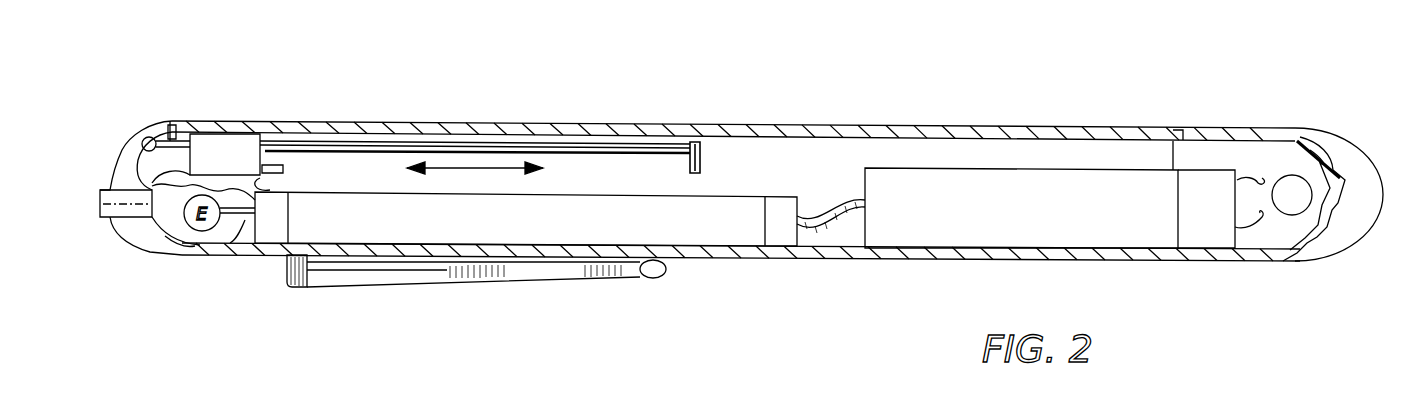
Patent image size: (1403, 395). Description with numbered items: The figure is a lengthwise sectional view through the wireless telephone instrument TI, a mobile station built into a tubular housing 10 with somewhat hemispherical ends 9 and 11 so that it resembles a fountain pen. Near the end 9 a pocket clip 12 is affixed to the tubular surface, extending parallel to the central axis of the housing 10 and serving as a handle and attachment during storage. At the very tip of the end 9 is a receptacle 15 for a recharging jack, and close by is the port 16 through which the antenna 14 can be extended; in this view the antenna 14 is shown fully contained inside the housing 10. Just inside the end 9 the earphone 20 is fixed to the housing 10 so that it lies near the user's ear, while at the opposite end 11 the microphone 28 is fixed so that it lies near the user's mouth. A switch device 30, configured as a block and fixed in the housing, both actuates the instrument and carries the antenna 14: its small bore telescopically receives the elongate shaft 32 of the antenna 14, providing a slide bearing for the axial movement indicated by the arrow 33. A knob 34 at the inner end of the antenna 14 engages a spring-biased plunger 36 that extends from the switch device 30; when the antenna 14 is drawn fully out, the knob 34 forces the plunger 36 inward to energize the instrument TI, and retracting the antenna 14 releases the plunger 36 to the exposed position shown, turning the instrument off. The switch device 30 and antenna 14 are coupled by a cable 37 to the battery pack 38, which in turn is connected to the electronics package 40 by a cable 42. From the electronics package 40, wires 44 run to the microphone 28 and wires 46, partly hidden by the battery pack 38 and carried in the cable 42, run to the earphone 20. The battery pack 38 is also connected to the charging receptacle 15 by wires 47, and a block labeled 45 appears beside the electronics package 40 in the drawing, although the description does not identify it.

The hemispherical end 9 is at (122, 158).
The tubular housing 10 is at (348, 119).
The hemispherical end 11 is at (1377, 228).
The pocket clip 12 is at (430, 282).
The antenna 14 is at (148, 136).
The receptacle 15 is at (85, 230).
The port 16 is at (170, 128).
The earphone 20 is at (180, 240).
The microphone 28 is at (1292, 215).
The switch device 30 is at (223, 147).
The elongate shaft 32 is at (392, 148).
The arrow 33 is at (465, 168).
The knob 34 is at (700, 162).
The spring-biased plunger 36 is at (270, 165).
The cable 37 is at (277, 185).
The battery pack 38 is at (551, 193).
The electronics package 40 is at (950, 170).
The cable 42 is at (822, 208).
The wires 44 is at (1258, 172).
The switch module 45 is at (1206, 209).
The wires 46 is at (240, 230).
The wires 47 is at (172, 236).
The wireless telephone instrument TI is at (680, 104).